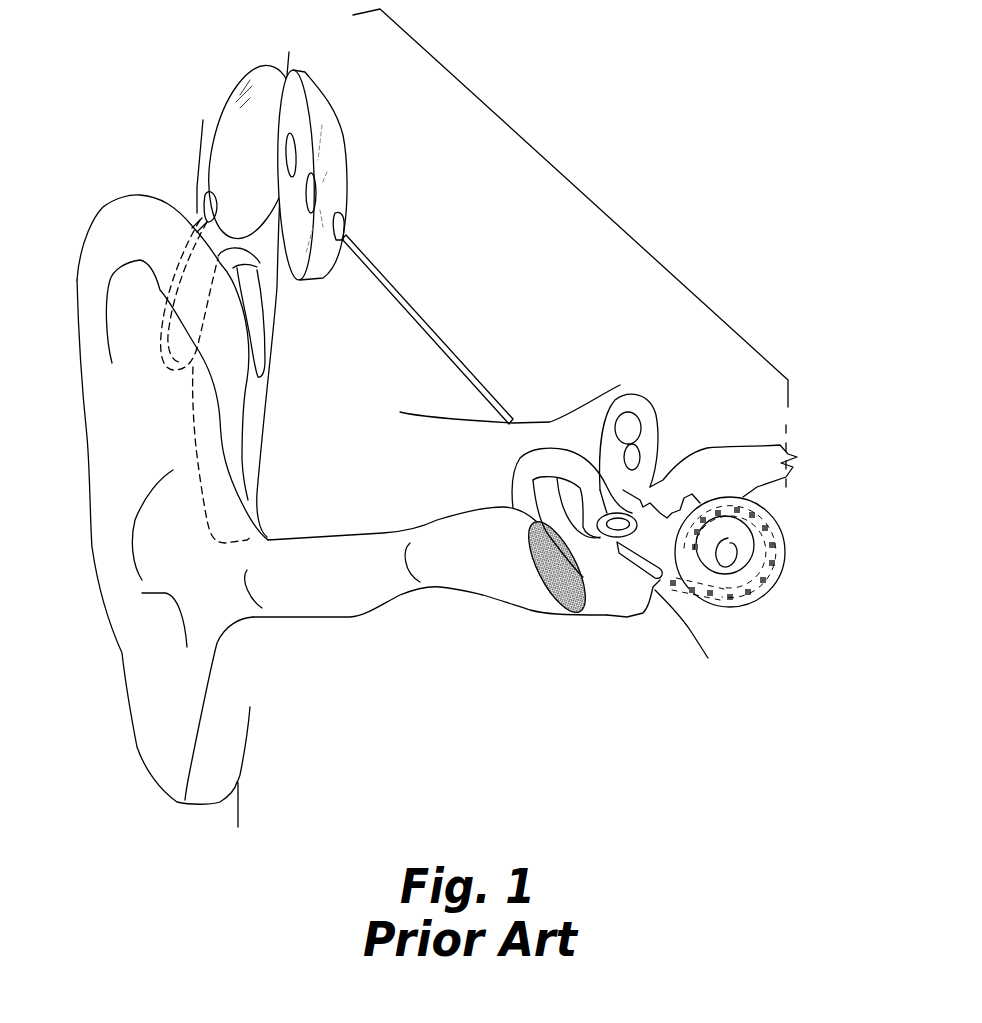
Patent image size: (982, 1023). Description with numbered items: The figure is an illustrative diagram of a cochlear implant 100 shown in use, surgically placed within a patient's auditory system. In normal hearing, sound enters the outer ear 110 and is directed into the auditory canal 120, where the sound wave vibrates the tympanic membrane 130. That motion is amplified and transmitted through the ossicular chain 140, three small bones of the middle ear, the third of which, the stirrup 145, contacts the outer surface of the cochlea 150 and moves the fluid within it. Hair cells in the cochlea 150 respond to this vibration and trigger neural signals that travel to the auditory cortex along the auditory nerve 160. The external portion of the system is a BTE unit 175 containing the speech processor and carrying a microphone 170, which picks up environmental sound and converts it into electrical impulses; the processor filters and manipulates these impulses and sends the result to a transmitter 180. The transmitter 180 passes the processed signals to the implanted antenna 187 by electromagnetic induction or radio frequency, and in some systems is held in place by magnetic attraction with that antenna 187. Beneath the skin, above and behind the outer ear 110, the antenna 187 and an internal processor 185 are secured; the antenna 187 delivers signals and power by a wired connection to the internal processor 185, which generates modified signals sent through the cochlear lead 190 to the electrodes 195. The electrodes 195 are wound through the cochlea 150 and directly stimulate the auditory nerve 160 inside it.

The cochlear implant 100 is at (557, 165).
The outer ear 110 is at (152, 683).
The auditory canal 120 is at (380, 607).
The tympanic membrane 130 is at (562, 610).
The ossicular chain 140 is at (557, 462).
The stirrup 145 is at (605, 540).
The cochlea 150 is at (771, 585).
The auditory nerve 160 is at (725, 448).
The microphone 170 is at (265, 353).
The BTE unit 175 is at (259, 261).
The transmitter 180 is at (228, 118).
The internal processor 185 is at (325, 135).
The antenna 187 is at (297, 84).
The cochlear lead 190 is at (437, 330).
The electrodes 195 is at (710, 597).